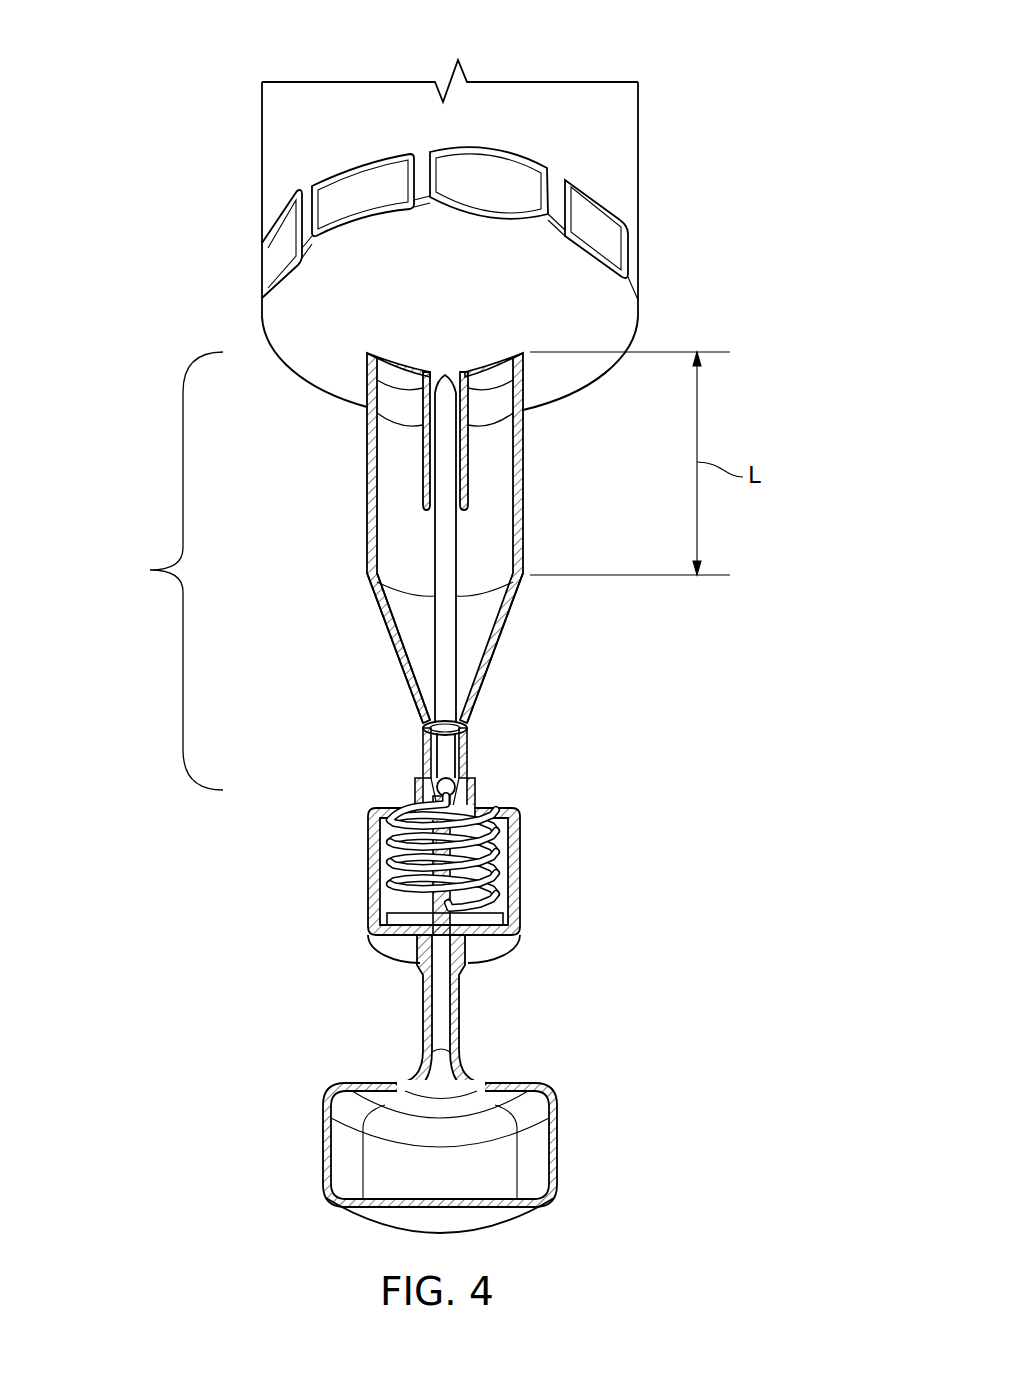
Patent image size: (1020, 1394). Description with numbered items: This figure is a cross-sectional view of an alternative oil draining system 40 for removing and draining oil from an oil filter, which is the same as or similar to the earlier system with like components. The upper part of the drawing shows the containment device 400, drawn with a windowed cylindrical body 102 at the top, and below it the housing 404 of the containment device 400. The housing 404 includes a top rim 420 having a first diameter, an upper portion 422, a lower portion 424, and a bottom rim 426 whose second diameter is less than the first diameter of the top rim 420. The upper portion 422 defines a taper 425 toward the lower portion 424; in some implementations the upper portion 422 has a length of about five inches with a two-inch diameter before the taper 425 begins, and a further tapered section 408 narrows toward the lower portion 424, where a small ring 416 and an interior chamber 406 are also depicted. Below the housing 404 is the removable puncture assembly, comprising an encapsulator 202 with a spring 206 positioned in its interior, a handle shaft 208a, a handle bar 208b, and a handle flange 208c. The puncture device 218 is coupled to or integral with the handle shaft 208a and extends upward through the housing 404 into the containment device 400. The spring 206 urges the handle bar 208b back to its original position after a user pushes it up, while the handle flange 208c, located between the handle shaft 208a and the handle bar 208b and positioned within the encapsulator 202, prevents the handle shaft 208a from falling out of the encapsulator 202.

The system 40 is at (180, 65).
The container / cartridge body 102 is at (640, 324).
The containment device 400 is at (150, 570).
The top rim 420 is at (367, 372).
The housing 404 is at (330, 542).
The inner chamber 406 is at (398, 433).
The upper portion 422 is at (350, 495).
The puncture device 218 is at (452, 472).
The taper 425 is at (508, 625).
The tapered section 408 is at (488, 690).
The connector ring 416 is at (423, 728).
The bottom rim 426 is at (467, 748).
The lower portion 424 is at (402, 766).
The encapsulator 202 is at (368, 847).
The spring 206 is at (522, 838).
The handle flange 208c is at (387, 918).
The handle shaft 208a is at (440, 1002).
The handle bar 208b is at (343, 1112).